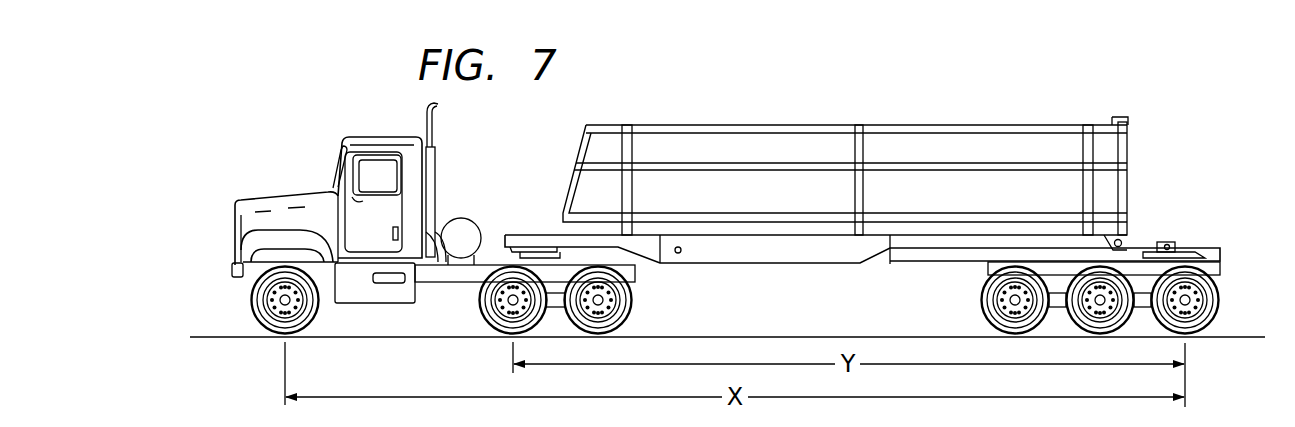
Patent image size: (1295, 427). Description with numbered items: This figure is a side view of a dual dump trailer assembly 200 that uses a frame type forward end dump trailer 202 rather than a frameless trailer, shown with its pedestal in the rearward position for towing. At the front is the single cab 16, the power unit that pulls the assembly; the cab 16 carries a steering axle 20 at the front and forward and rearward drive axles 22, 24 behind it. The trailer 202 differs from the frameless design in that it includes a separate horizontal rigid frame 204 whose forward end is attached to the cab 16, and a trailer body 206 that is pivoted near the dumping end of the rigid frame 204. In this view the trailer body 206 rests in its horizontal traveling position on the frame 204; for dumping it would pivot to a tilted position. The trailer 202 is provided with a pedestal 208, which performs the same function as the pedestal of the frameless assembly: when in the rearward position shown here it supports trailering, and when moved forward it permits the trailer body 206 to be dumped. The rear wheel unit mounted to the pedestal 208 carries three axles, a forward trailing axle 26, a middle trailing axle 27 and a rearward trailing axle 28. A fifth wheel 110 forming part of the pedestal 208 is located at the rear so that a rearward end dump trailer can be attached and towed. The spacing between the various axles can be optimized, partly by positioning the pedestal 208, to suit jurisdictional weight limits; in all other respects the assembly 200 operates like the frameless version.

The dual dump trailer assembly 200 is at (292, 91).
The cab 16 is at (289, 191).
The steering axle 20 is at (268, 297).
The forward drive axle 22 is at (496, 297).
The rearward drive axle 24 is at (616, 297).
The forward trailing axle 26 is at (1000, 297).
The middle trailing axle 27 is at (1077, 295).
The rearward trailing axle 28 is at (1202, 297).
The frame type forward end dump trailer 202 is at (932, 121).
The rigid frame 204 is at (797, 264).
The trailer body 206 is at (716, 124).
The pedestal 208 is at (1132, 254).
The fifth wheel 110 is at (1192, 257).